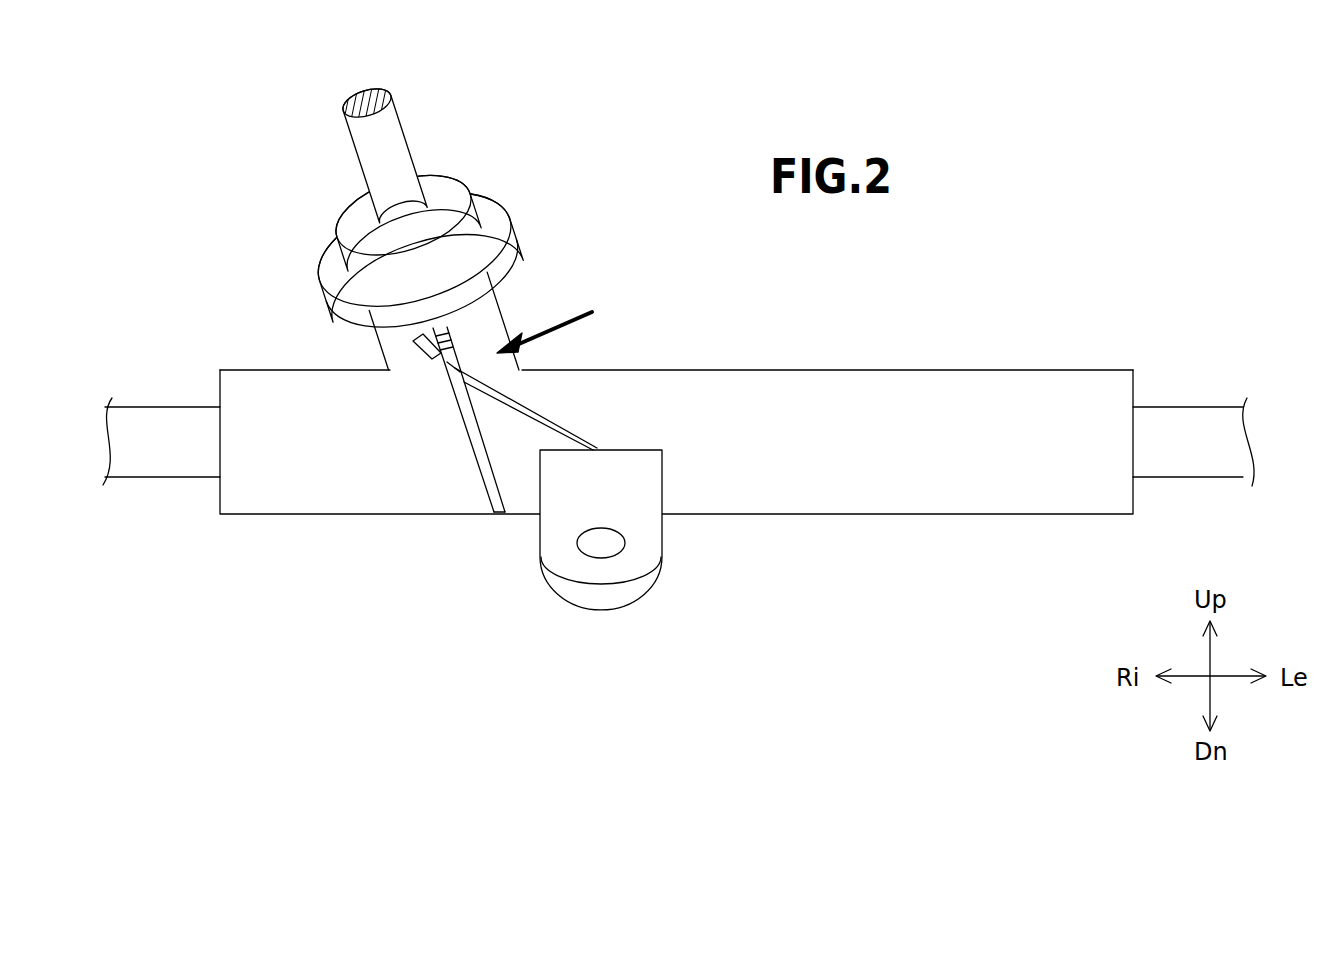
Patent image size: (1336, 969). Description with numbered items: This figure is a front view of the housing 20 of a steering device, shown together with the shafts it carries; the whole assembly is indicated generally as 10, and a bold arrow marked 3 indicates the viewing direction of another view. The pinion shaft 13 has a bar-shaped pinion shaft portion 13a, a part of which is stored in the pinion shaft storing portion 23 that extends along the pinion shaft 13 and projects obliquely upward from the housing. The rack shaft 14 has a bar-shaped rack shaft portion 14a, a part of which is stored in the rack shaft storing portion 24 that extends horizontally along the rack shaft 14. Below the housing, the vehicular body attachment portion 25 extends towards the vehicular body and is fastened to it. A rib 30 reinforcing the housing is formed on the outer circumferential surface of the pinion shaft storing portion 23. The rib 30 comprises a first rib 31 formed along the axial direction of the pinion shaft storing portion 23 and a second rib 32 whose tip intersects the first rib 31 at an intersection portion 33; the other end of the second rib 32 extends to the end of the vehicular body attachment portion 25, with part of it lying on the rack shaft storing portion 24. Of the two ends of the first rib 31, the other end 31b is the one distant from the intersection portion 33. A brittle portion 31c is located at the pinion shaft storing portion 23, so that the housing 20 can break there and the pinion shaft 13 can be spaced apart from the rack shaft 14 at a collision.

The stabilizer device 10 is at (176, 176).
The pinion shaft 13 is at (320, 281).
The pinion shaft portion 13a is at (407, 128).
The rack shaft 14 is at (1193, 409).
The rack shaft portion 14a is at (1181, 405).
The housing 20 is at (981, 366).
The pinion shaft storing portion 23 is at (493, 315).
The rack shaft storing portion 24 is at (783, 404).
The vehicular body attachment portion 25 is at (649, 526).
The rib 30 is at (450, 596).
The first rib 31 is at (463, 414).
The other end 31b is at (502, 516).
The brittle portion 31c is at (426, 344).
The second rib 32 is at (526, 413).
The intersection portion 33 is at (446, 364).
The viewing direction of FIG. 3 is at (562, 320).